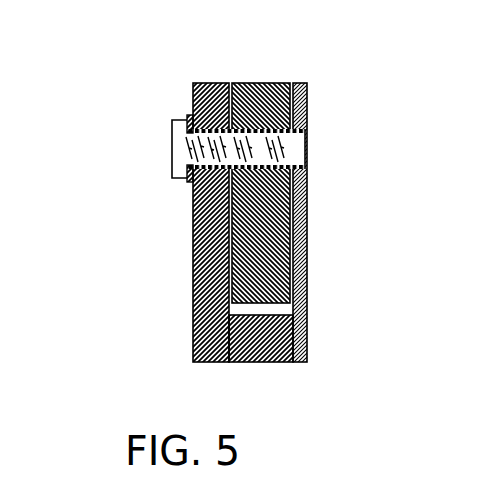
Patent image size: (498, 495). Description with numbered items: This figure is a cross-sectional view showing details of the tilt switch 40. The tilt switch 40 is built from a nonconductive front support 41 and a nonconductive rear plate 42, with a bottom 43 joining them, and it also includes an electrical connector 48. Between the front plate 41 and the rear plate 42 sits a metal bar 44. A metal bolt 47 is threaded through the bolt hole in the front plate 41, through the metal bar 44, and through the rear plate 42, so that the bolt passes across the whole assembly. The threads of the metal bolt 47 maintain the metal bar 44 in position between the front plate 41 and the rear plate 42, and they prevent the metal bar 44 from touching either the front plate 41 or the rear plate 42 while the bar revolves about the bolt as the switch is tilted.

The tilt switch 40 is at (165, 218).
The nonconductive front support 41 is at (193, 83).
The nonconductive rear plate 42 is at (307, 100).
The bottom 43 is at (278, 363).
The metal bar 44 is at (280, 280).
The metal bolt 47 is at (172, 143).
The electrical connector 48 is at (187, 118).